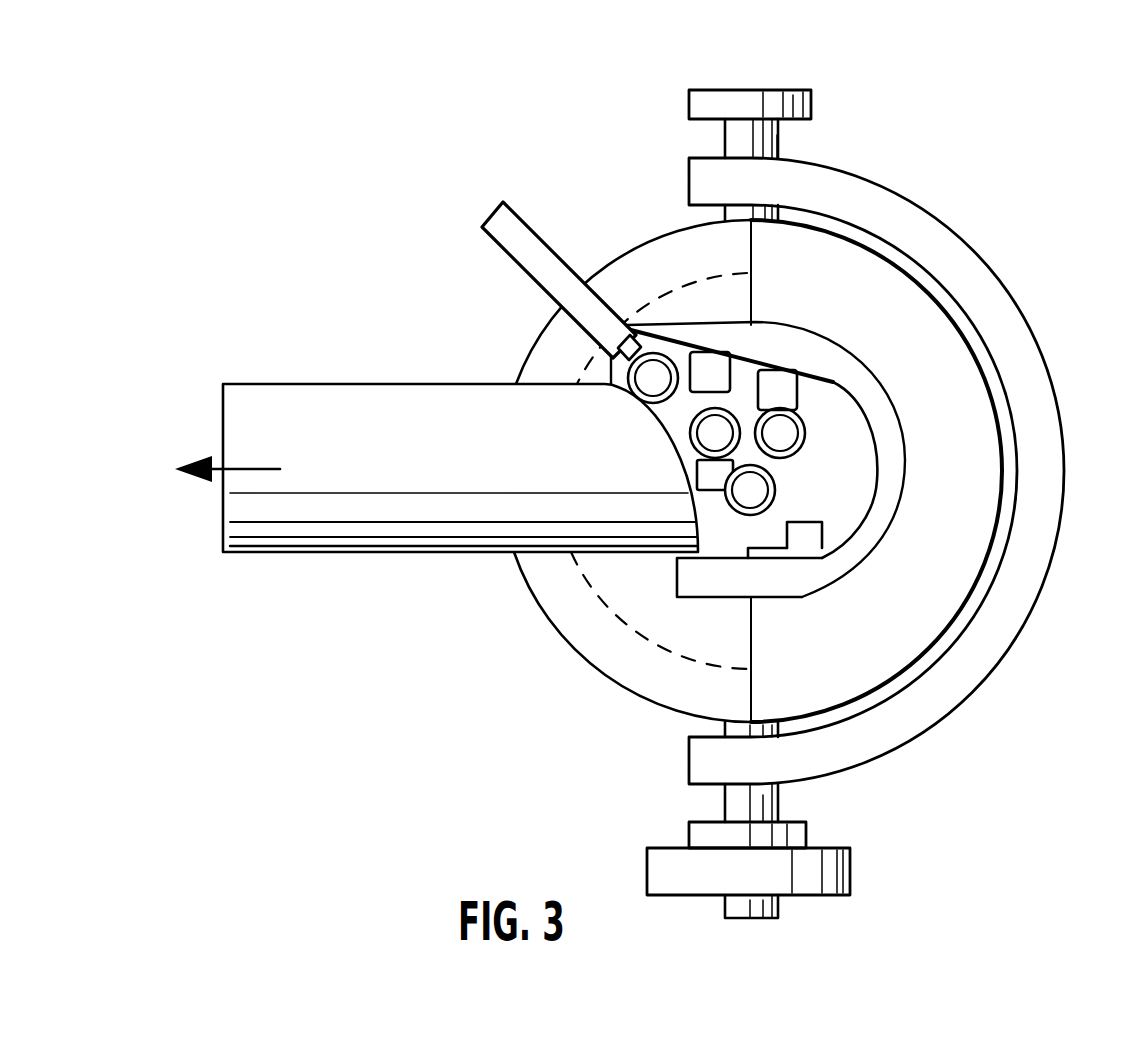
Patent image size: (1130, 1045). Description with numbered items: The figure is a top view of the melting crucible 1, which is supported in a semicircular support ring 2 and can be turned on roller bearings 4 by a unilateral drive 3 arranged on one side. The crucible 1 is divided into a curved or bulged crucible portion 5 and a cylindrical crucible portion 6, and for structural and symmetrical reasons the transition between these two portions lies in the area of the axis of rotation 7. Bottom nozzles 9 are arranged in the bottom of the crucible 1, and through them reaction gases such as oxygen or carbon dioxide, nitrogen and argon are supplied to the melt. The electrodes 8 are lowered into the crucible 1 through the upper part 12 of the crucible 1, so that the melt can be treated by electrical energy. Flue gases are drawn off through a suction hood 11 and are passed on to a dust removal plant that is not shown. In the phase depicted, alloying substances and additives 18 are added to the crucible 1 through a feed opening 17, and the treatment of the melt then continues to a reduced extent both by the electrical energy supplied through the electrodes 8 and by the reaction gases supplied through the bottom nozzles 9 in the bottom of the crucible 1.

The melting crucible 1 is at (1002, 455).
The semicircular support ring 2 is at (910, 232).
The unilateral drive 3 is at (838, 873).
The roller bearings 4 is at (803, 103).
The curved or bulged crucible portion 5 is at (965, 547).
The cylindrical crucible portion 6 is at (620, 647).
The axis of rotation 7 is at (737, 135).
The electrodes 8 is at (777, 482).
The bottom nozzles 9 is at (800, 390).
The suction hood 11 is at (247, 417).
The upper part of the crucible 12 is at (783, 580).
The feed opening 17 is at (522, 262).
The alloying substances and additives 18 is at (470, 190).